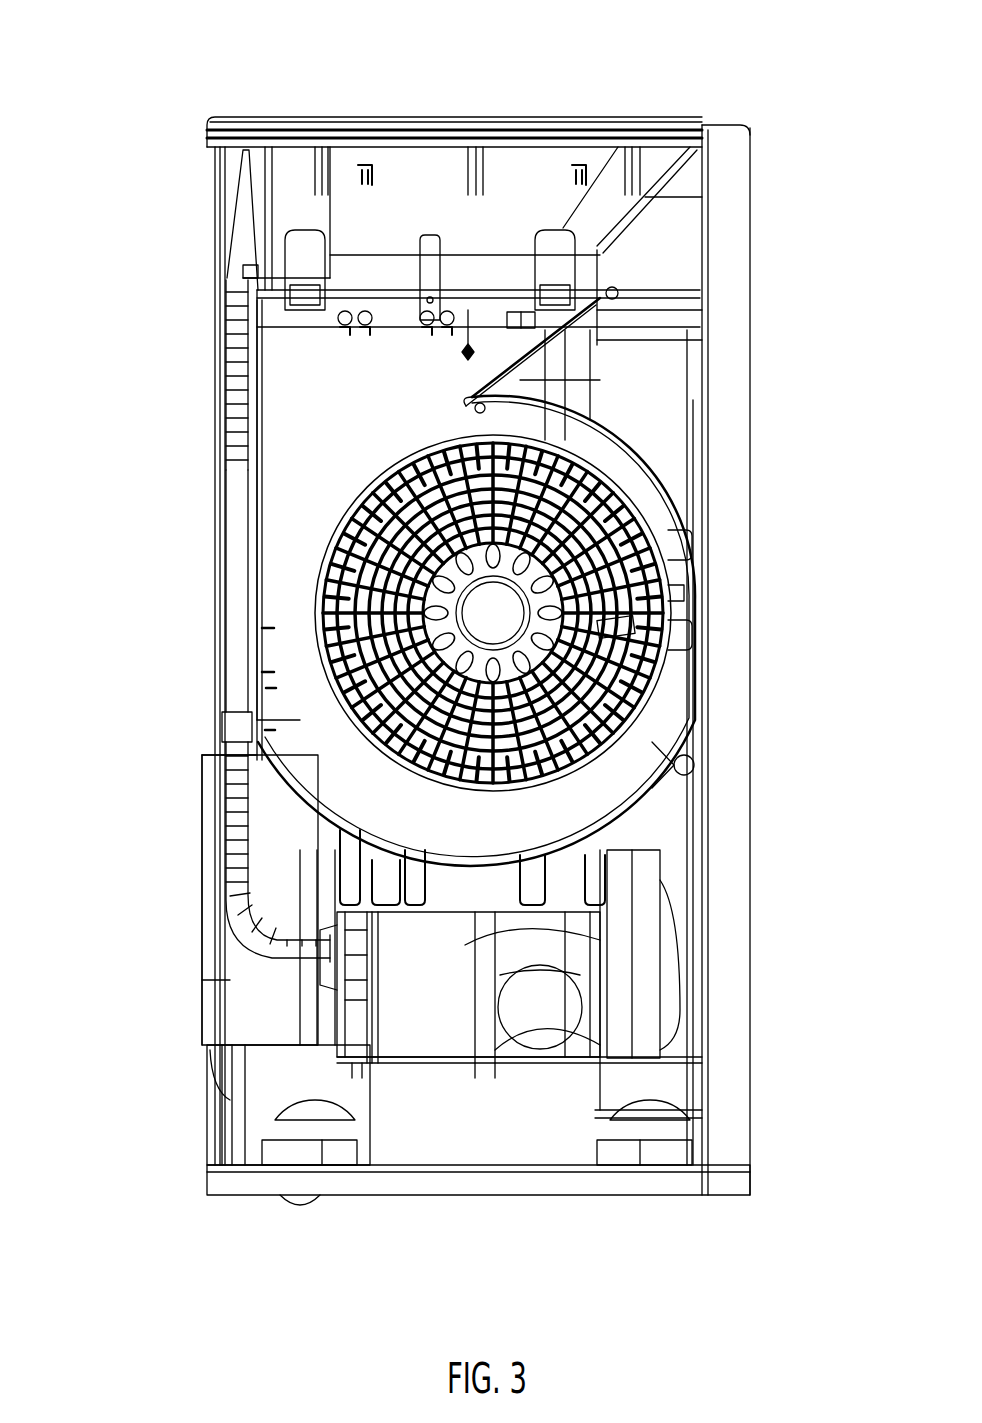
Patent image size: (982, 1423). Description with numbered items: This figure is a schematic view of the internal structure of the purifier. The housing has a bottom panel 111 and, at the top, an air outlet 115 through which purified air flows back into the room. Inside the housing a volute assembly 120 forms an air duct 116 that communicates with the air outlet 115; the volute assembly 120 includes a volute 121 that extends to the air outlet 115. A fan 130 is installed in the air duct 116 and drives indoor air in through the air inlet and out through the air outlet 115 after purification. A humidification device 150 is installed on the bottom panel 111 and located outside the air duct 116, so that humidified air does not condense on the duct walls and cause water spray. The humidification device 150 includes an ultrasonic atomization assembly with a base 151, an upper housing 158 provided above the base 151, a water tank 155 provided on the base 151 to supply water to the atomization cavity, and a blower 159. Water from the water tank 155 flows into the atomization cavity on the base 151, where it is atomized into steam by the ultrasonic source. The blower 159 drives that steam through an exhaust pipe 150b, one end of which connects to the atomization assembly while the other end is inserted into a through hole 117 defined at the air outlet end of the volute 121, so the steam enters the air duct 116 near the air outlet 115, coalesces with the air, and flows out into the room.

The bottom panel 111 is at (472, 1185).
The air outlet 115 is at (480, 118).
The air duct 116 is at (668, 545).
The through hole 117 is at (255, 212).
The volute assembly 120 is at (695, 757).
The volute 121 is at (285, 507).
The fan 130 is at (648, 660).
The humidification device 150 is at (205, 852).
The exhaust pipe 150b is at (265, 672).
The base 151 is at (270, 1102).
The water tank 155 is at (235, 977).
The upper housing 158 is at (470, 943).
The blower 159 is at (535, 1030).